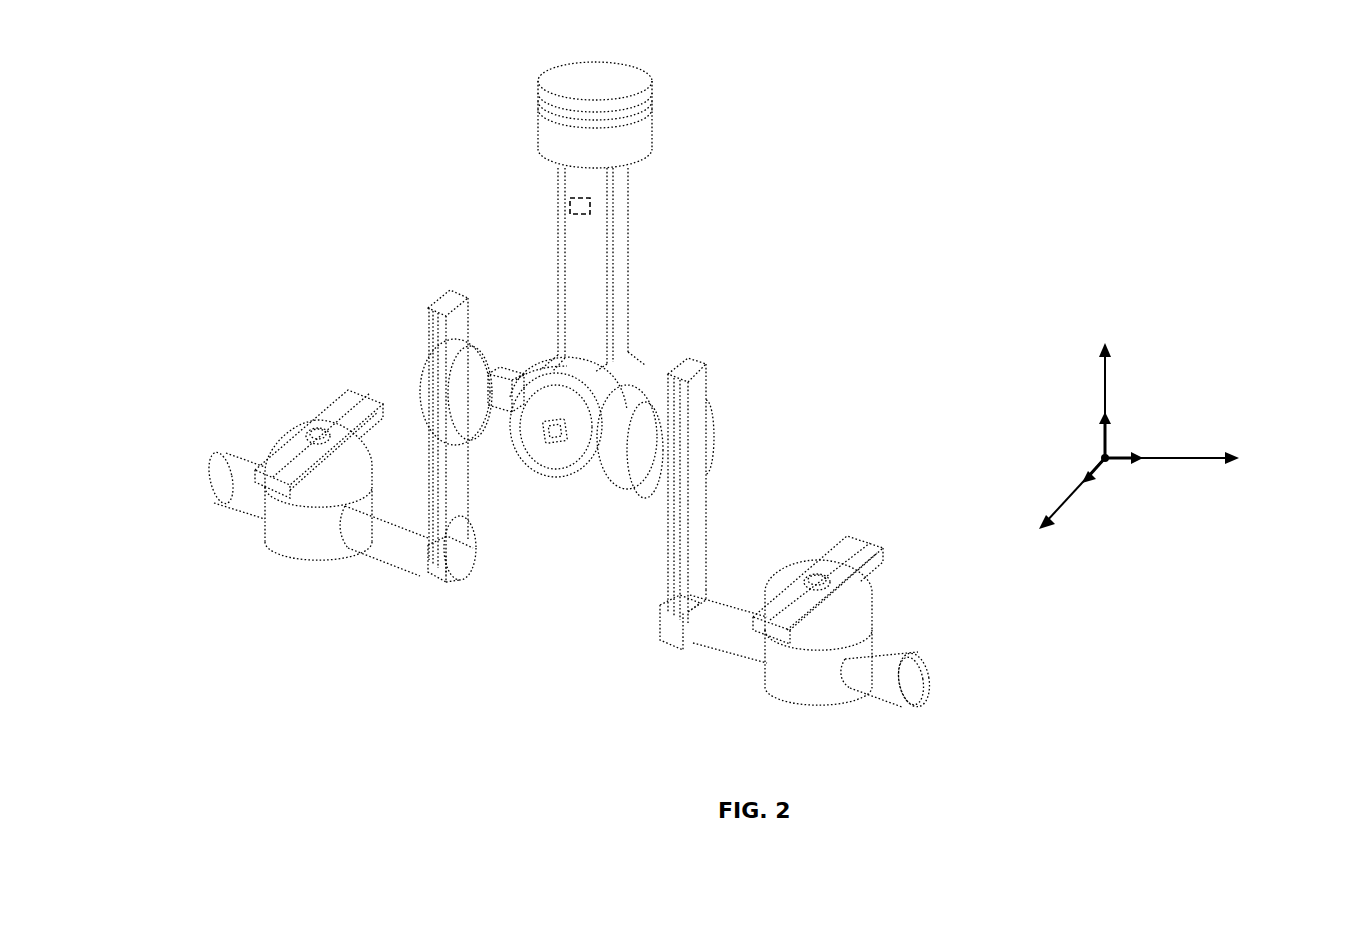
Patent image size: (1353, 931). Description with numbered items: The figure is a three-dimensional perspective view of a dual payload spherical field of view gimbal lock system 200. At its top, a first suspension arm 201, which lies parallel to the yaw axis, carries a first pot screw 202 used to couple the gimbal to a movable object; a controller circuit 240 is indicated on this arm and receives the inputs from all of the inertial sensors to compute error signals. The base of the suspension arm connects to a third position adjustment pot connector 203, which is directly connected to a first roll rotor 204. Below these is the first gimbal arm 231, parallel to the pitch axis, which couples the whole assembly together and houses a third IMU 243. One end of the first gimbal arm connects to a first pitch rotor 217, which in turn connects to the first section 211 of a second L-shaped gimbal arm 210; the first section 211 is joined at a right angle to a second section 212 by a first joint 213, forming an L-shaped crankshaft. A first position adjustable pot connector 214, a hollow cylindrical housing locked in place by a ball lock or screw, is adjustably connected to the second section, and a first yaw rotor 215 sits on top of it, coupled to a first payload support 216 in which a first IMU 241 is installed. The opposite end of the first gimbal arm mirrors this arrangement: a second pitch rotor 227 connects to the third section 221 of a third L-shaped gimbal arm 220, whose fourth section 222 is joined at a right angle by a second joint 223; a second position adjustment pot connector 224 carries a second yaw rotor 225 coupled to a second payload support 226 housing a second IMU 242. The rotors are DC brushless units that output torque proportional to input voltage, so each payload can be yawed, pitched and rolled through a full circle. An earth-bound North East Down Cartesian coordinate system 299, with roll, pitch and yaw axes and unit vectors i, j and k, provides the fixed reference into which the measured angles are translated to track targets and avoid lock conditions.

The gimbal lock system 200 is at (933, 115).
The first suspension arm 201 is at (625, 242).
The first pot screw 202 is at (647, 128).
The third position adjustment pot connector 203 is at (637, 368).
The first roll rotor 204 is at (560, 472).
The second L-shaped gimbal arm 210 is at (857, 503).
The first section 211 is at (683, 529).
The second section 212 is at (723, 640).
The first joint 213 is at (670, 628).
The first position adjustable pot connector 214 is at (818, 690).
The first yaw rotor 215 is at (852, 620).
The first payload support 216 is at (850, 569).
The first pitch rotor 217 is at (652, 488).
The third L-shaped gimbal arm 220 is at (246, 366).
The third section 221 is at (449, 459).
The fourth section 222 is at (227, 500).
The second joint 223 is at (440, 568).
The second position adjustment pot connector 224 is at (308, 538).
The second yaw rotor 225 is at (275, 435).
The second payload support 226 is at (343, 424).
The second pitch rotor 227 is at (508, 358).
The first gimbal arm 231 is at (500, 415).
The controller circuit 240 is at (568, 207).
The first IMU 241 is at (813, 580).
The second IMU 242 is at (320, 437).
The third IMU 243 is at (555, 430).
The Cartesian coordinate system 299 is at (1163, 302).